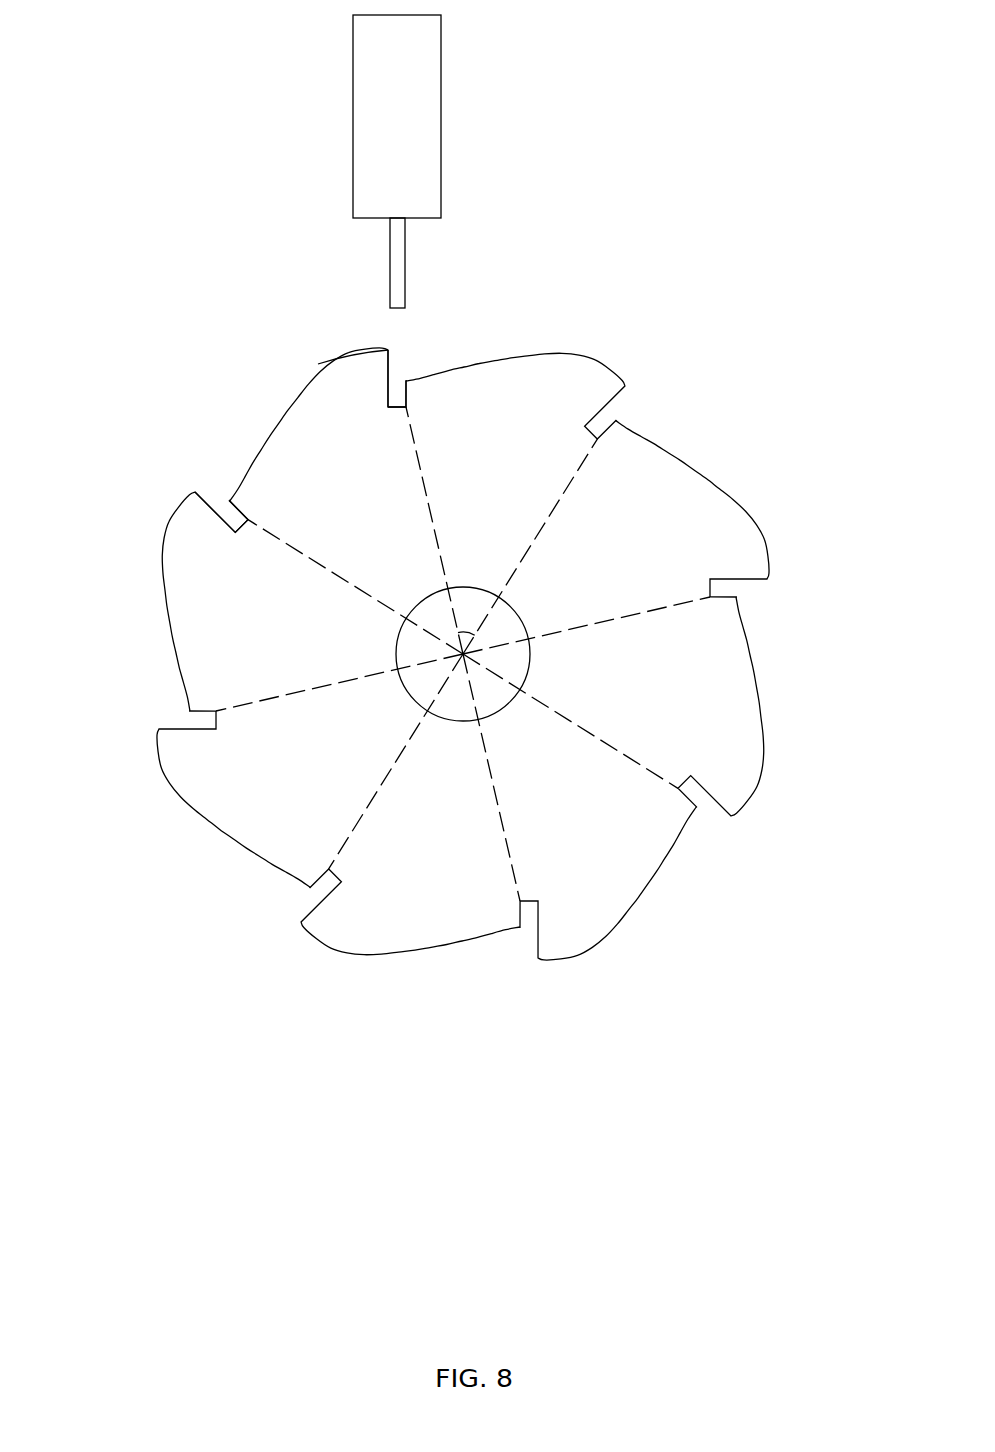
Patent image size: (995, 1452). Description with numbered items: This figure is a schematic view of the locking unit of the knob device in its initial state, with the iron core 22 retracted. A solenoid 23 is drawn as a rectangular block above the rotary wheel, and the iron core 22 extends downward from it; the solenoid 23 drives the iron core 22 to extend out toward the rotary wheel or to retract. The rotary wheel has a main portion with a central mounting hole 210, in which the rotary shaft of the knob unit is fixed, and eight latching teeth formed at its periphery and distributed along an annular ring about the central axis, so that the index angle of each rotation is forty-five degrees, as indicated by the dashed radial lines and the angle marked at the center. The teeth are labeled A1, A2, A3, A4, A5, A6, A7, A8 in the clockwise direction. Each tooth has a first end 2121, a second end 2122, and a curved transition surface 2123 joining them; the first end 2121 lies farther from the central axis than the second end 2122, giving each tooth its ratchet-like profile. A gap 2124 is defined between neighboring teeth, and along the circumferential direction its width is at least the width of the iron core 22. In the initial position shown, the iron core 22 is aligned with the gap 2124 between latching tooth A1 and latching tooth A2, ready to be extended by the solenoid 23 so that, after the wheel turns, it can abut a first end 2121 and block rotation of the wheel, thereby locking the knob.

The solenoid 23 is at (403, 123).
The iron core 22 is at (400, 250).
The mounting hole 210 is at (420, 683).
The first end 2121 is at (385, 367).
The second end 2122 is at (229, 511).
The transition surface 2123 is at (316, 366).
The gap 2124 is at (401, 386).
The latching tooth A1 is at (286, 441).
The latching tooth A2 is at (509, 385).
The latching tooth A3 is at (683, 490).
The latching tooth A4 is at (735, 706).
The latching tooth A5 is at (618, 883).
The latching tooth A6 is at (393, 925).
The latching tooth A7 is at (220, 797).
The latching tooth A8 is at (200, 607).